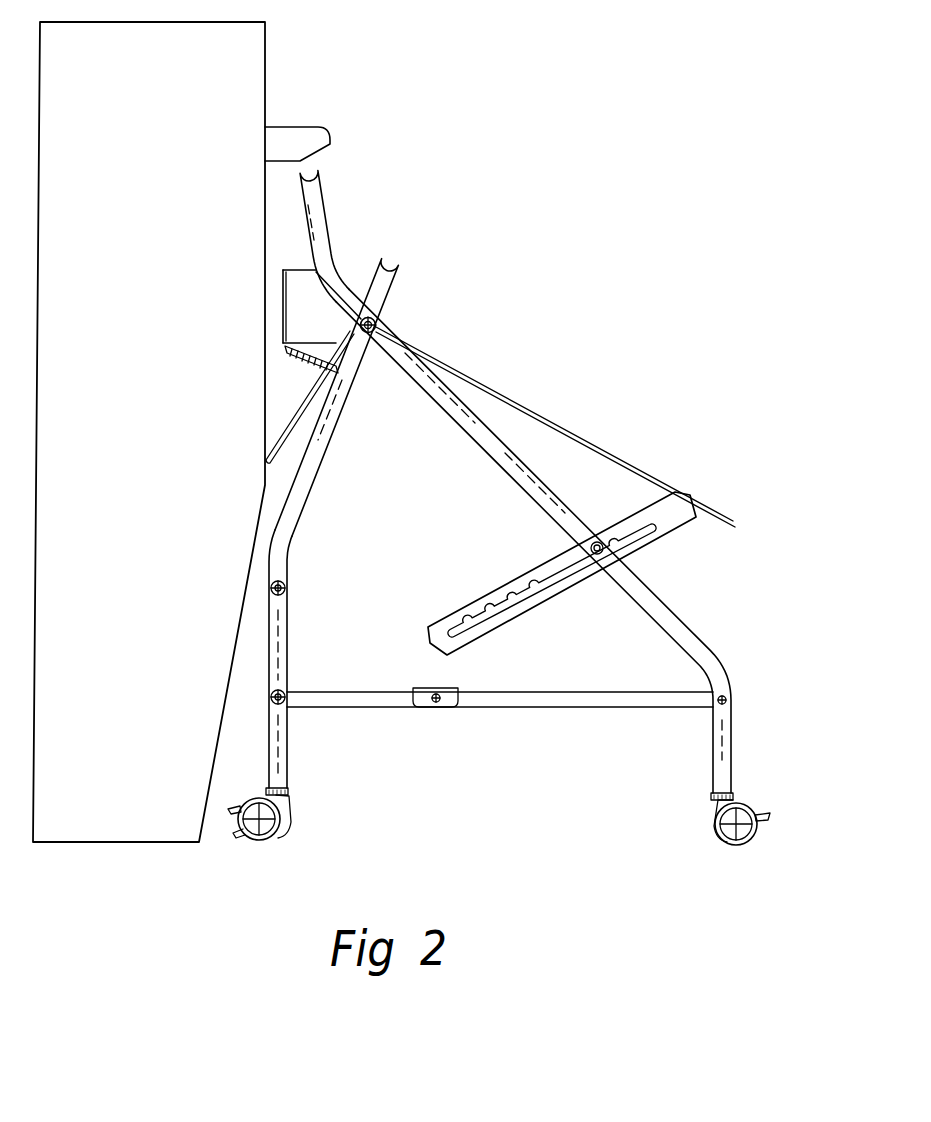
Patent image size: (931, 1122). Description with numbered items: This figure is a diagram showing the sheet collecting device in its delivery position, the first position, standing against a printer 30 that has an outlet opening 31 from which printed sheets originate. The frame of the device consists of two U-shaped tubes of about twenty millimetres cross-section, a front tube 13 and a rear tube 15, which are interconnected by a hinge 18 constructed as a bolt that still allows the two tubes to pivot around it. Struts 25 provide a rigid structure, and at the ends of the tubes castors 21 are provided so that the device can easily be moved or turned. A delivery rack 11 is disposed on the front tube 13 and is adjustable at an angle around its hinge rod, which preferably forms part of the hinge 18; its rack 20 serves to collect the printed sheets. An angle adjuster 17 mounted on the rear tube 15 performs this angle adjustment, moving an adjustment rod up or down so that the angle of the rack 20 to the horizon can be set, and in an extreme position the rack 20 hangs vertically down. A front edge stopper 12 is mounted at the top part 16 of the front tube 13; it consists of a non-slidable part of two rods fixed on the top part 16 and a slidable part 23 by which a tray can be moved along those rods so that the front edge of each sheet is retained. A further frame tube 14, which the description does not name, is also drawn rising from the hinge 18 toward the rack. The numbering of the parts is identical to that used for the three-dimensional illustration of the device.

The printer 30 is at (156, 94).
The outlet opening 31 is at (325, 135).
The delivery rack 11 is at (601, 379).
The slidable part 23 is at (283, 310).
The front edge stopper 12 is at (324, 330).
The top part 16 is at (316, 172).
The rear tube 15 is at (730, 730).
The diagonal frame tube 14 is at (394, 262).
The front tube 13 is at (285, 745).
The hinge 18 is at (376, 322).
The rack 20 is at (600, 446).
The angle adjuster 17 is at (563, 590).
The struts 25 is at (524, 700).
The castors 21 is at (282, 828).